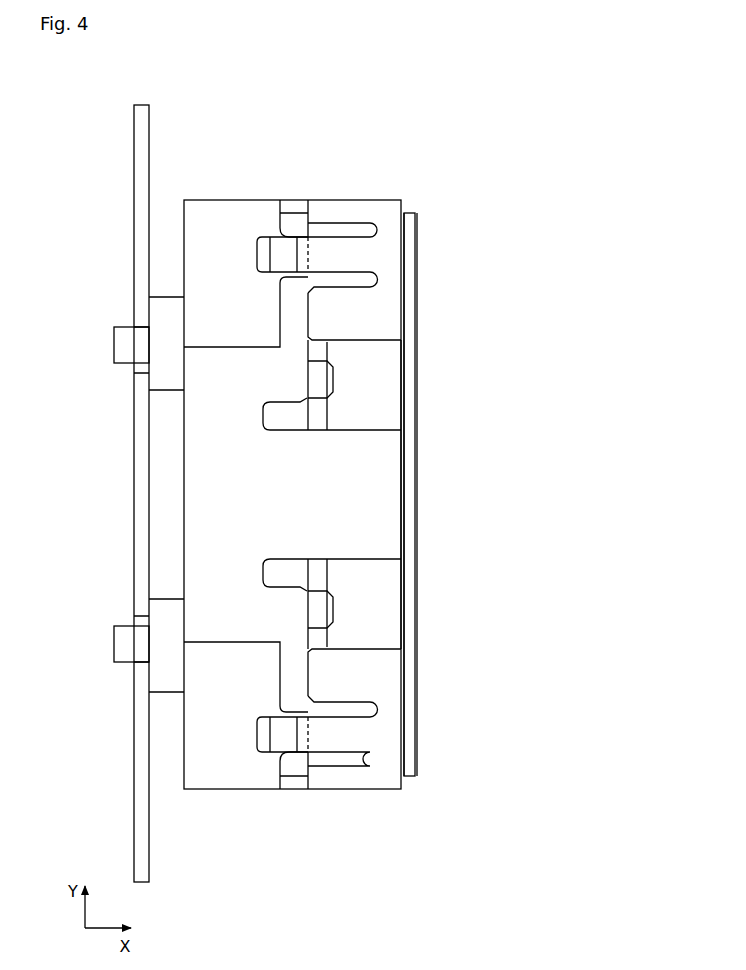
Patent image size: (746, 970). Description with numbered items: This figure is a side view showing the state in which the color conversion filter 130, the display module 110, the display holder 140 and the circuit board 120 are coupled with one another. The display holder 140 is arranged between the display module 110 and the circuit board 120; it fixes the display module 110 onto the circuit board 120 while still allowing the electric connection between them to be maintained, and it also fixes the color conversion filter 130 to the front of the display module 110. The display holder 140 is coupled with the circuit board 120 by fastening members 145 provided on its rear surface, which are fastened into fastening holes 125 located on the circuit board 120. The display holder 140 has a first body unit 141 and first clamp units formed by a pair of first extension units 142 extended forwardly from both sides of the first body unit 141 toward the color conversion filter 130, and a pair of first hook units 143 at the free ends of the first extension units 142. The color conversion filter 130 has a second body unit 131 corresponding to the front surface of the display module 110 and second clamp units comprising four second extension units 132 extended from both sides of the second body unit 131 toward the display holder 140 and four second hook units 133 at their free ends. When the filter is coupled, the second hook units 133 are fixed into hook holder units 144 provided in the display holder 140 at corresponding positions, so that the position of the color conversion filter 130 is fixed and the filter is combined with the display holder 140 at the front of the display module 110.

The display module 110 is at (402, 380).
The circuit board 120 is at (140, 163).
The fastening hole 125 is at (141, 321).
The color conversion filter 130 is at (420, 518).
The second body unit 131 is at (412, 415).
The second extension unit 132 is at (332, 258).
The second hook unit 133 is at (283, 253).
The display holder 140 is at (191, 805).
The first body unit 141 is at (205, 512).
The first extension unit 142 is at (388, 478).
The first hook unit 143 is at (413, 505).
The hook holder unit 144 is at (305, 226).
The fastening member 145 is at (124, 348).